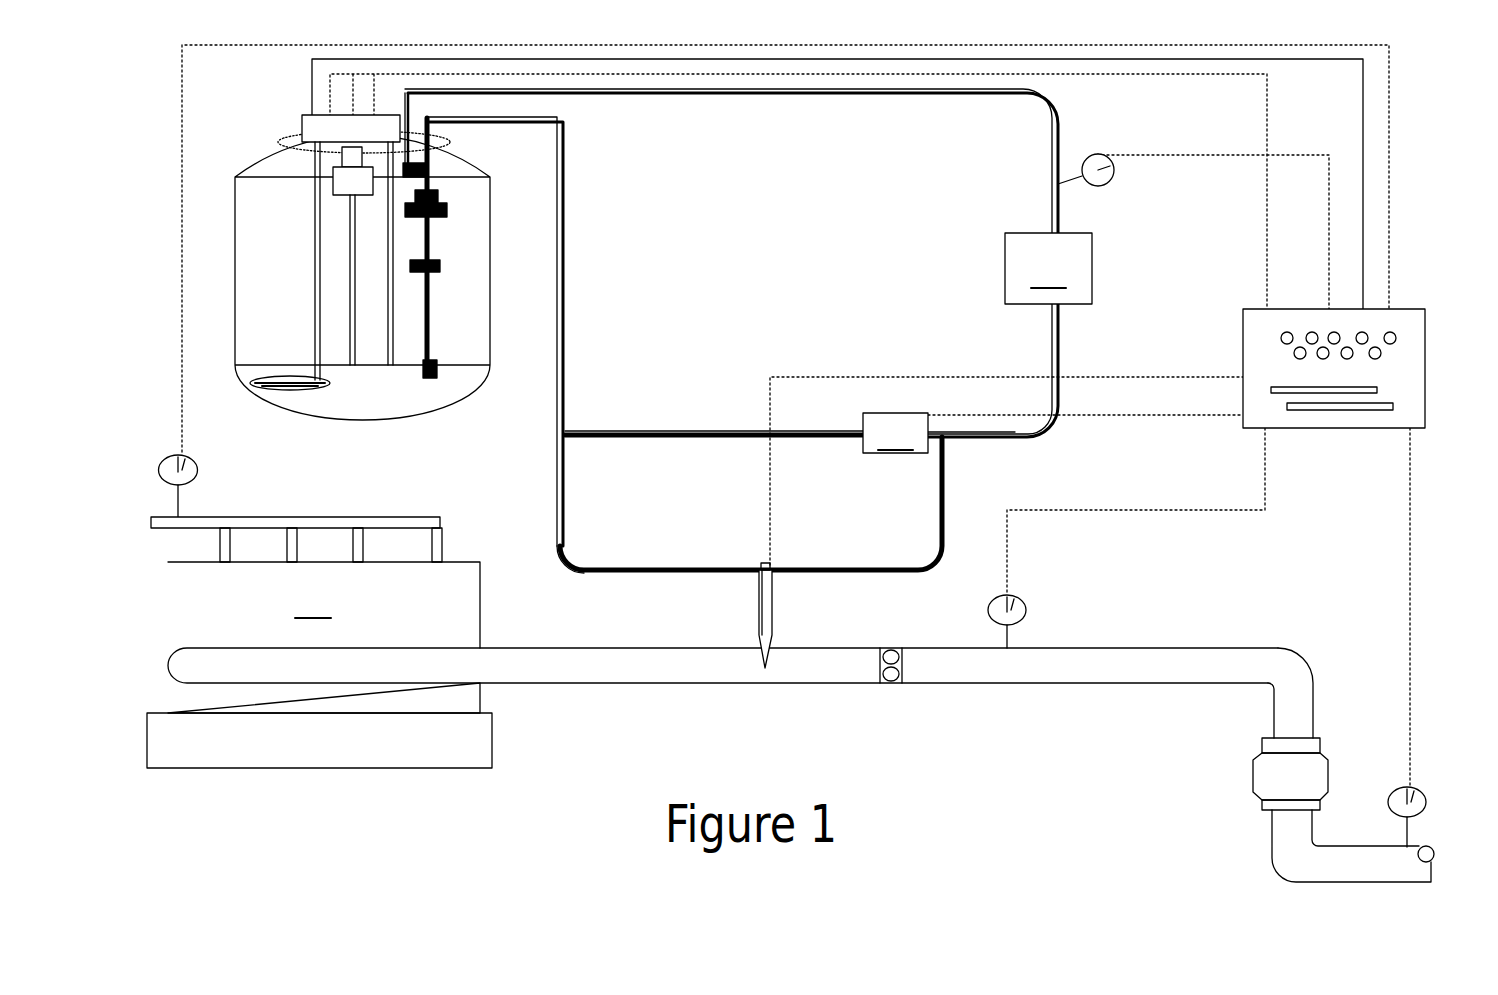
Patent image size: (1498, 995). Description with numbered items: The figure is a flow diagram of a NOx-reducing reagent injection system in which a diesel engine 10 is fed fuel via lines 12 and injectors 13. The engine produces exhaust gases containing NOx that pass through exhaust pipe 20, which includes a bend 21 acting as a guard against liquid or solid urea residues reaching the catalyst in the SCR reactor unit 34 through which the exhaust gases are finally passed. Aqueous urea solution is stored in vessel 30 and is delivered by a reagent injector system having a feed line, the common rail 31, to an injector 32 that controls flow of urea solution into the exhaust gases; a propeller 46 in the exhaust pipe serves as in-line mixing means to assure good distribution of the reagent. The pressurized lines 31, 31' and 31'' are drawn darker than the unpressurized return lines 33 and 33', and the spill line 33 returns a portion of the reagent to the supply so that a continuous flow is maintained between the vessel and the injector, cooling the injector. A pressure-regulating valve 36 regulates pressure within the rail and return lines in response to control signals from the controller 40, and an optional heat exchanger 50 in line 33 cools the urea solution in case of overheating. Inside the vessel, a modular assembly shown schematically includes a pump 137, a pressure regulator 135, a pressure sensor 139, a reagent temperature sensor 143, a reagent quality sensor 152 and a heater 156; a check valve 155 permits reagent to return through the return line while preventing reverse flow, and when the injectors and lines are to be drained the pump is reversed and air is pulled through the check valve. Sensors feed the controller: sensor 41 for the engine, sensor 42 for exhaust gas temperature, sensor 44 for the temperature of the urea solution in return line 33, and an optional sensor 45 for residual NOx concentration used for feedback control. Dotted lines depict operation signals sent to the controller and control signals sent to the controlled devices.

The diesel engine 10 is at (319, 665).
The fuel lines 12 is at (363, 517).
The fuel injectors 13 is at (435, 540).
The exhaust pipe 20 is at (517, 657).
The bend 21 is at (1275, 665).
The vessel 30 is at (262, 150).
The common rail 31 is at (538, 331).
The pressurized line 31' is at (714, 393).
The pressurized line 31'' is at (749, 505).
The injector 32 is at (770, 618).
The spill line 33 is at (731, 263).
The return line 33' is at (971, 464).
The SCR reactor unit 34 is at (1275, 768).
The pressure-regulating valve 36 is at (895, 433).
The controller 40 is at (1395, 306).
The engine sensor 41 is at (195, 457).
The exhaust gas temperature sensor 42 is at (1017, 600).
The urea solution temperature sensor 44 is at (1114, 165).
The residual NOx sensor 45 is at (1412, 790).
The propeller 46 is at (870, 665).
The heat exchanger 50 is at (1048, 268).
The pressure regulator 135 is at (447, 212).
The pump 137 is at (343, 197).
The pressure sensor 139 is at (438, 192).
The reagent temperature sensor 143 is at (422, 370).
The reagent quality sensor 152 is at (440, 266).
The check valve 155 is at (418, 148).
The heater 156 is at (260, 380).